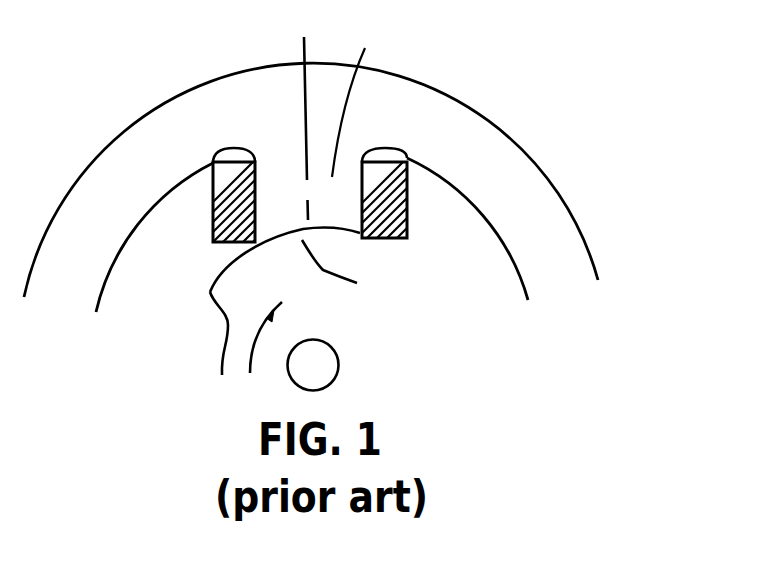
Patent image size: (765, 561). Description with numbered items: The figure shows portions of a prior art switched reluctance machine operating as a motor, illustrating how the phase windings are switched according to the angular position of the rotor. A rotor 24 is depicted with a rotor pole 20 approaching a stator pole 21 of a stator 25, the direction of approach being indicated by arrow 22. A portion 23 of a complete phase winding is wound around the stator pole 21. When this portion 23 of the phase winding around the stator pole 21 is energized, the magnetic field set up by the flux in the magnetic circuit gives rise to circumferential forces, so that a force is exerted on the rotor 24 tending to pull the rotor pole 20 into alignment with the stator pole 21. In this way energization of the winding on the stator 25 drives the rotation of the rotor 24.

The rotor pole 20 is at (252, 272).
The stator pole 21 is at (357, 121).
The arrow 22 is at (289, 330).
The portion of phase winding 23 is at (410, 217).
The rotor 24 is at (345, 330).
The stator 25 is at (460, 143).